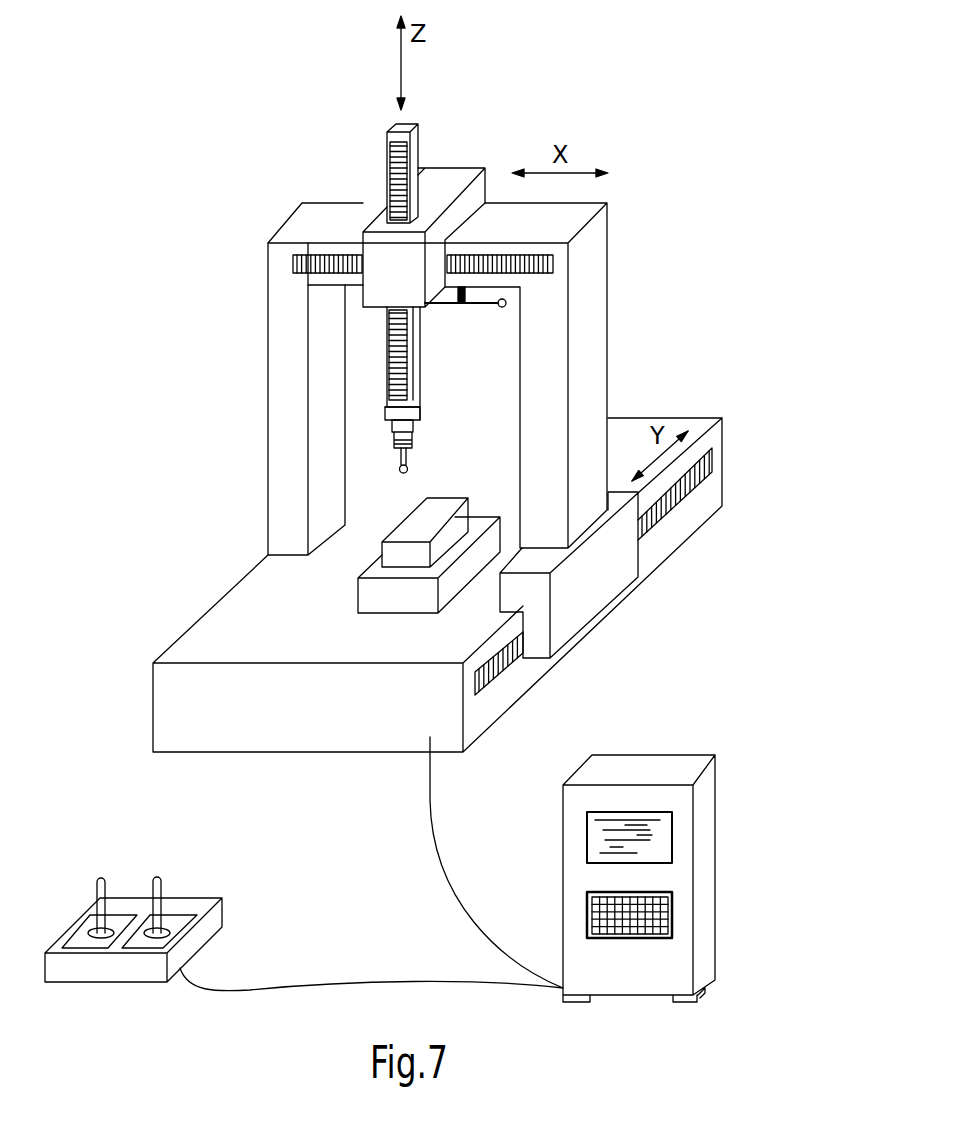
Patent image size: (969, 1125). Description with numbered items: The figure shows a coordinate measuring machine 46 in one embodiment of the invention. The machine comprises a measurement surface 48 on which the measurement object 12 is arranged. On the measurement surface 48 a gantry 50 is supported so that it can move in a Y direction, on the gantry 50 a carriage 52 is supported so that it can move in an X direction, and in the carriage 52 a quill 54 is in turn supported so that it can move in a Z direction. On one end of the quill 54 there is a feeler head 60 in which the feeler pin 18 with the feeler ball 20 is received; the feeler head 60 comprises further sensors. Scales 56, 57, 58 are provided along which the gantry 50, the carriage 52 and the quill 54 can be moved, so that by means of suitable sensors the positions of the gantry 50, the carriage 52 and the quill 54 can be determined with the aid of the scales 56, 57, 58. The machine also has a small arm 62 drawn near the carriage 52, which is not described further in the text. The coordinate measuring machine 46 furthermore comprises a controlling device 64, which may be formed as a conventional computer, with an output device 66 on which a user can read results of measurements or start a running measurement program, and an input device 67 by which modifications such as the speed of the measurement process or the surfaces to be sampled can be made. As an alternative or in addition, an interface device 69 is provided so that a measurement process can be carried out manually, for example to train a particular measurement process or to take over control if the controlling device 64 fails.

The measurement object 12 is at (427, 520).
The feeler pin 18 is at (394, 452).
The feeler ball 20 is at (410, 472).
The coordinate measuring machine 46 is at (634, 177).
The measurement surface 48 is at (213, 645).
The gantry 50 is at (288, 345).
The carriage 52 is at (380, 222).
The quill 54 is at (396, 124).
The scale 56 is at (548, 264).
The scale 57 is at (668, 497).
The scale 58 is at (398, 162).
The feeler head 60 is at (428, 441).
The sensor arm 62 is at (457, 303).
The controlling device 64 is at (638, 770).
The output device 66 is at (665, 835).
The input device 67 is at (668, 907).
The interface device 69 is at (205, 893).